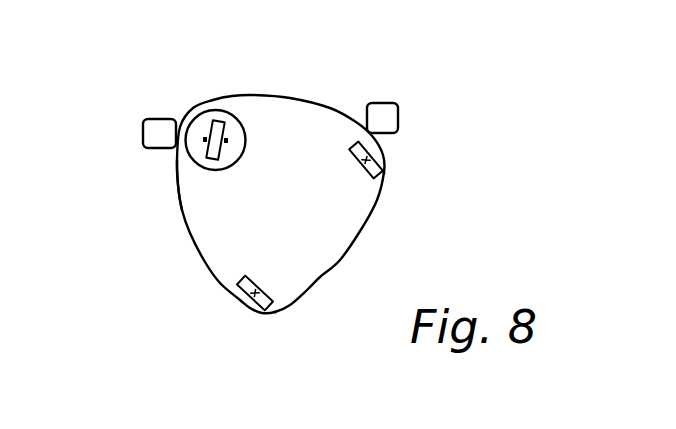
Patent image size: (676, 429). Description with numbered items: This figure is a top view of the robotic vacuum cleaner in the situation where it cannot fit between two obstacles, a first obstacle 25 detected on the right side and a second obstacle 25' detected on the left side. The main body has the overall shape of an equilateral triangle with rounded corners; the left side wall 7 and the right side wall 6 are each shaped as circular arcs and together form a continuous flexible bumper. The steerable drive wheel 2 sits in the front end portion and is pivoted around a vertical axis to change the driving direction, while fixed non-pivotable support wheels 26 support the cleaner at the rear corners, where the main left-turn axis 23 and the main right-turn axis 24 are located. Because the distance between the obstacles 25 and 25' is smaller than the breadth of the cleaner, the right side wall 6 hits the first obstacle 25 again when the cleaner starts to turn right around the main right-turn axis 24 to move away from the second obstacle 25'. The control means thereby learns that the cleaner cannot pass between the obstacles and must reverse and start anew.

The steerable drive wheel 2 is at (202, 112).
The right side wall 6 is at (308, 101).
The left side wall 7 is at (187, 232).
The main left-turn axis 23 is at (242, 300).
The main right-turn axis 24 is at (380, 158).
The first obstacle 25 is at (422, 114).
The second obstacle 25' is at (112, 124).
The support wheels 26 is at (384, 173).